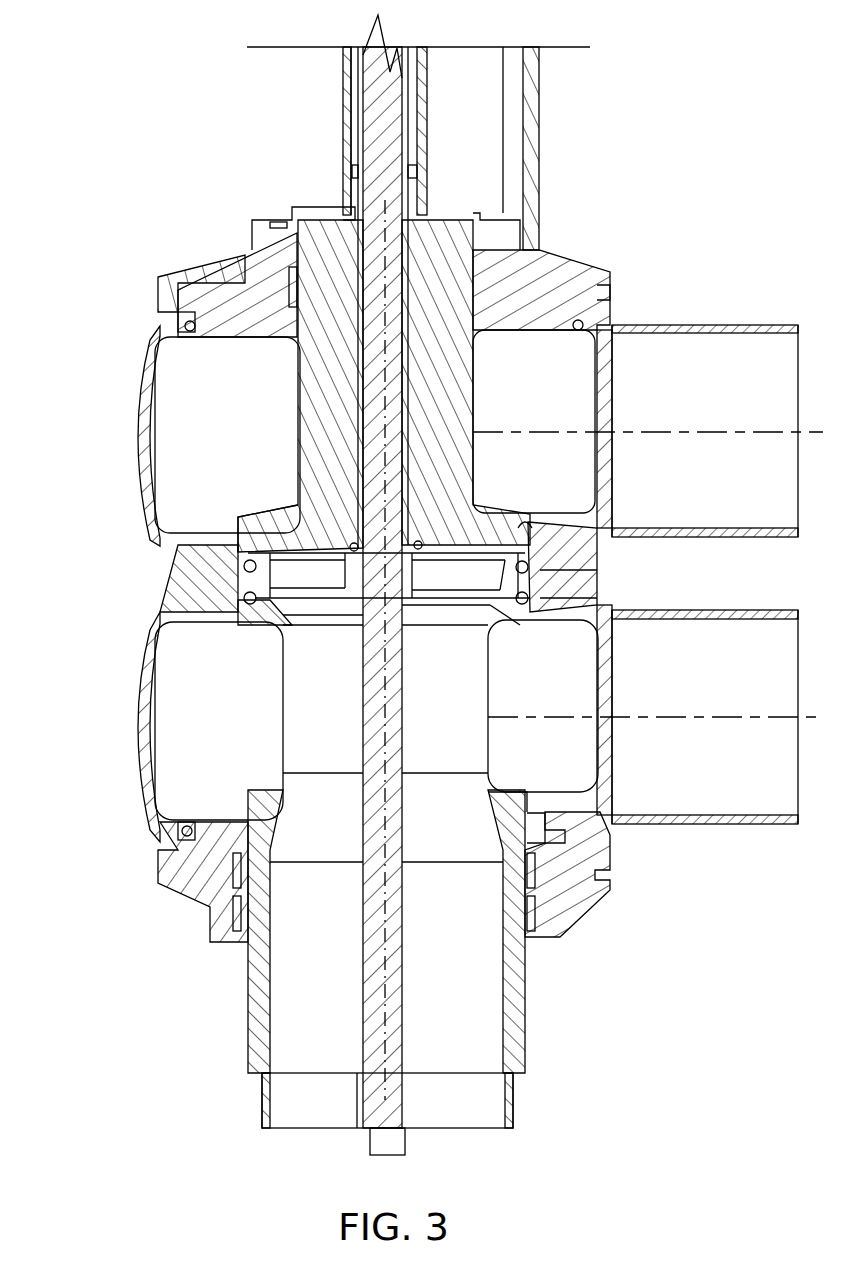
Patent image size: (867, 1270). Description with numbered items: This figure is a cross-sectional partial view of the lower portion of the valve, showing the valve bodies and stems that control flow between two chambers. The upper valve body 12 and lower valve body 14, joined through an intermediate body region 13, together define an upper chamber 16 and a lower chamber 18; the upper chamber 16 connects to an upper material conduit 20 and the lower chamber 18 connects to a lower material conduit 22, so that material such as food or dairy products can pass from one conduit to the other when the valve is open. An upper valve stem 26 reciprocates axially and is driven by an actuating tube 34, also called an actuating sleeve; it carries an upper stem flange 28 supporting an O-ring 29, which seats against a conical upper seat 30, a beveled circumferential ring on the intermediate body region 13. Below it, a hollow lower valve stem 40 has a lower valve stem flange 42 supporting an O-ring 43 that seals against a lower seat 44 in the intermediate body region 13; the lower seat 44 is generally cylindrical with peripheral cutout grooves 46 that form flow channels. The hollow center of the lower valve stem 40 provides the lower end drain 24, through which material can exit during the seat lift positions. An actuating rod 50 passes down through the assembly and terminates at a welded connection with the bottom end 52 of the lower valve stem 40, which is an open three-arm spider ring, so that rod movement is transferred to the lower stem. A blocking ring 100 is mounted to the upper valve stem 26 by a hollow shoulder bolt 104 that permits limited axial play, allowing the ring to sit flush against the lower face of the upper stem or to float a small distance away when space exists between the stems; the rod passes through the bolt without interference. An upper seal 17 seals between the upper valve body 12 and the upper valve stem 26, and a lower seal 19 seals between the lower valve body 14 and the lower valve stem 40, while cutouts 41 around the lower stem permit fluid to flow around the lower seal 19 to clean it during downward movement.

The upper valve body 12 is at (117, 420).
The intermediate body region 13 is at (147, 555).
The lower valve body 14 is at (117, 704).
The upper chamber 16 is at (232, 424).
The upper seal 17 is at (500, 322).
The lower chamber 18 is at (224, 757).
The lower seal 19 is at (560, 830).
The upper material conduit 20 is at (715, 393).
The lower material conduit 22 is at (715, 677).
The lower end drain 24 is at (324, 936).
The upper valve stem 26 is at (445, 240).
The upper stem flange 28 is at (300, 515).
The O-ring 29 is at (506, 540).
The conical upper seat 30 is at (535, 545).
The actuating tube 34 is at (356, 192).
The lower valve stem 40 is at (508, 1020).
The cutouts 41 is at (540, 792).
The lower valve stem flange 42 is at (495, 592).
The O-ring 43 is at (545, 600).
The lower seat 44 is at (545, 575).
The cutout grooves 46 is at (240, 578).
The actuating rod 50 is at (402, 513).
The bottom end 52 is at (513, 1095).
The blocking ring 100 is at (245, 575).
The shoulder bolt 104 is at (420, 592).